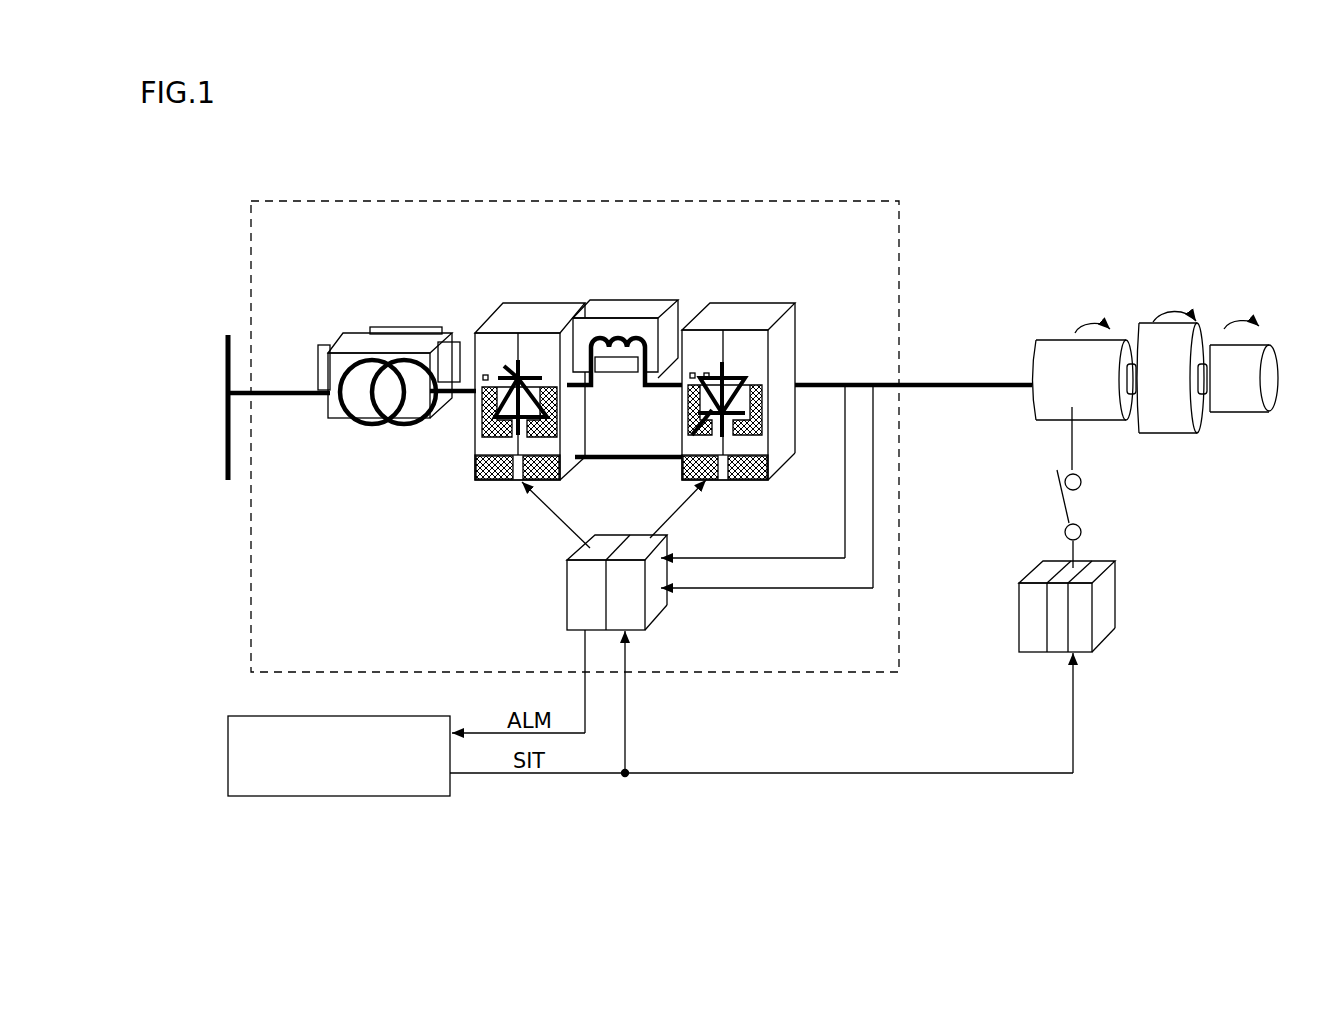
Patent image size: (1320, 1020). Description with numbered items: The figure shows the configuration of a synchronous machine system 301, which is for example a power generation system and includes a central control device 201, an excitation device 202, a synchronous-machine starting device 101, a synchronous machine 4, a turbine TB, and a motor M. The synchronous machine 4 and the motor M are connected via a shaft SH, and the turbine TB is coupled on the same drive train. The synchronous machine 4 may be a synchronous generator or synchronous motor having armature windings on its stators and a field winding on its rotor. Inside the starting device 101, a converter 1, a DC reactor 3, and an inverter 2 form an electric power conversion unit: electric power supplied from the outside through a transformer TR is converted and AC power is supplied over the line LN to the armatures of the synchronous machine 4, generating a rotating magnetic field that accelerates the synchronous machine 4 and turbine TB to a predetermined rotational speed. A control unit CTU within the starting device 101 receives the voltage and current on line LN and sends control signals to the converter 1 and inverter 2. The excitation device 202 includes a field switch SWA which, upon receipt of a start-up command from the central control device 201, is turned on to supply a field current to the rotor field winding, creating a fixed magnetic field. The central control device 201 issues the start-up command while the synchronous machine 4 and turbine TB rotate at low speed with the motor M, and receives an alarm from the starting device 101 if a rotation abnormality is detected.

The converter 1 is at (538, 313).
The inverter 2 is at (743, 313).
The DC reactor 3 is at (628, 305).
The synchronous machine 4 is at (1048, 352).
The synchronous-machine starting device 101 is at (845, 199).
The central control device 201 is at (228, 758).
The excitation device 202 is at (980, 468).
The synchronous machine system 301 is at (1212, 160).
The transformer TR is at (362, 343).
The output line LN is at (825, 382).
The control unit CTU is at (578, 603).
The field switch SWA is at (1063, 503).
The turbine TB is at (1150, 320).
The shaft SH is at (1117, 360).
The motor M is at (1253, 352).